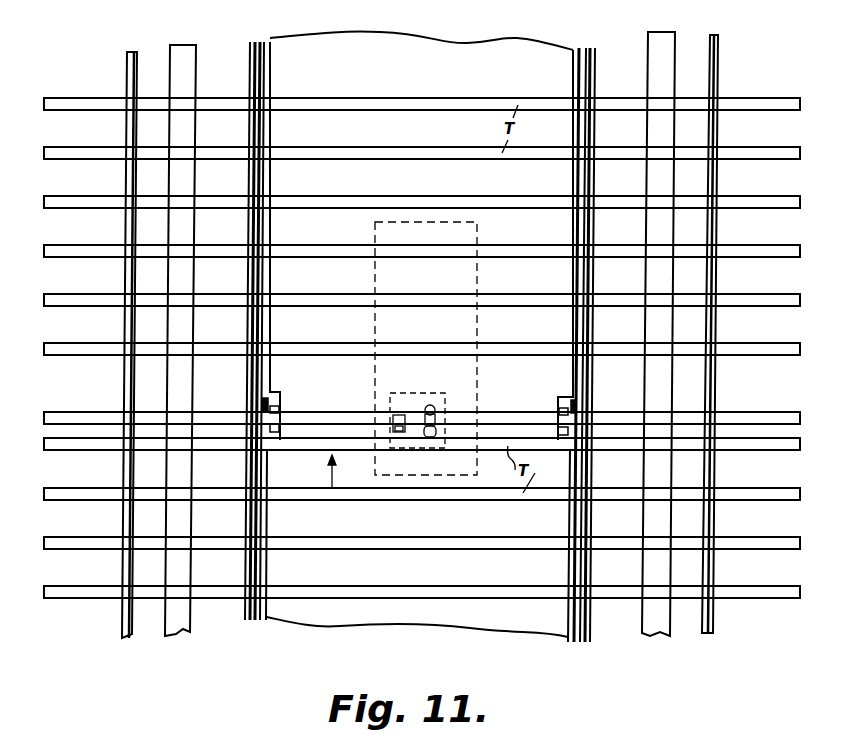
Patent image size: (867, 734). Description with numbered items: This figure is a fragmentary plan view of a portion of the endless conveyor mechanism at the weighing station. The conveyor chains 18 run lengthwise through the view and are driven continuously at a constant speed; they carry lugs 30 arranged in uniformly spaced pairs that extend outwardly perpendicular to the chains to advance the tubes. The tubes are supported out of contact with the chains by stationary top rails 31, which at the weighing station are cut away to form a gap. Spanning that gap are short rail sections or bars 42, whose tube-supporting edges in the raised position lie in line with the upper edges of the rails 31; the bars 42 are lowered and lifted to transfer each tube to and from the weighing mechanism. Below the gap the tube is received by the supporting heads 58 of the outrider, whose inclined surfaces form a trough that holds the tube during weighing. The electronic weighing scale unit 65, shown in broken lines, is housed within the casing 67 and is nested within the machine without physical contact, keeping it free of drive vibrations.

The conveyor chains 18 is at (249, 59).
The lugs 30 is at (251, 92).
The top rails 31 is at (266, 79).
The rail sections 42 is at (273, 400).
The supporting heads 58 is at (275, 428).
The electronic weighing scale unit 65 is at (427, 395).
The casing 67 is at (477, 383).